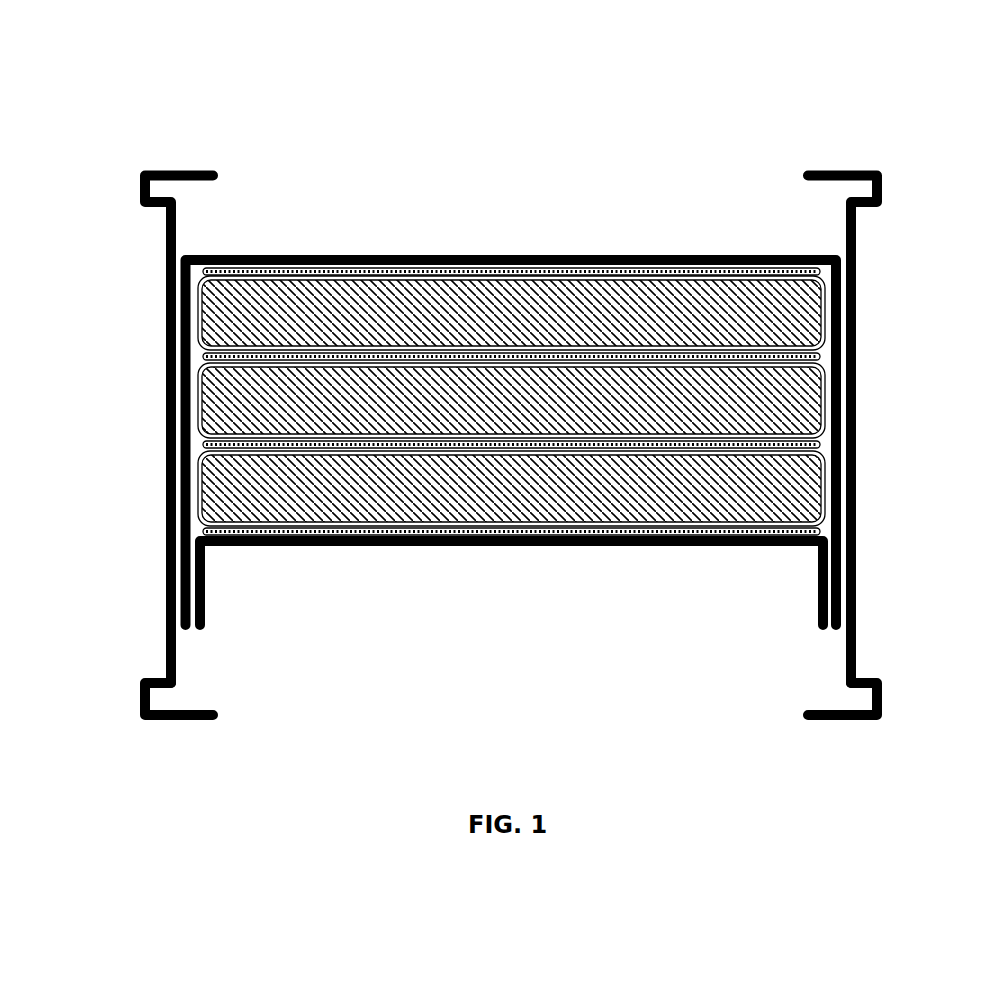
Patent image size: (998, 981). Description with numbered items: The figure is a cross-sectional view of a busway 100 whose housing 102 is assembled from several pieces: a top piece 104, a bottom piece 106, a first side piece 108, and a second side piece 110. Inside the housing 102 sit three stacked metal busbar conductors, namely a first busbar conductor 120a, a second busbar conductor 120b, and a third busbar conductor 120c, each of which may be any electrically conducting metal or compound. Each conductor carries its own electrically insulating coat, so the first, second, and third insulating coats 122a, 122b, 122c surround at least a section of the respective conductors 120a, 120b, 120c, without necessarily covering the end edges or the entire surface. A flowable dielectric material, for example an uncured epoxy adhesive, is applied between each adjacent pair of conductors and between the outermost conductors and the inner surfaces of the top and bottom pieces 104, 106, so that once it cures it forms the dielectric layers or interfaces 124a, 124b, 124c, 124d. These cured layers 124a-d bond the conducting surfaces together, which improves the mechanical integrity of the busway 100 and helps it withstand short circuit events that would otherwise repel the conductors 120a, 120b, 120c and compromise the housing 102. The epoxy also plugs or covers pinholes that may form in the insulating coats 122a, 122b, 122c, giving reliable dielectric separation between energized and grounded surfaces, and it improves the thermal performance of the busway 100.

The busway 100 is at (826, 46).
The housing 102 is at (872, 150).
The top piece 104 is at (357, 248).
The bottom piece 106 is at (355, 540).
The first side piece 108 is at (157, 635).
The second side piece 110 is at (848, 636).
The first busbar conductor 120a is at (800, 318).
The second busbar conductor 120b is at (800, 407).
The third busbar conductor 120c is at (800, 497).
The first electrically insulating coat 122a is at (815, 277).
The second electrically insulating coat 122b is at (813, 363).
The third electrically insulating coat 122c is at (813, 452).
The dielectric layer 124a is at (193, 263).
The dielectric layer 124b is at (193, 349).
The dielectric layer 124c is at (193, 437).
The dielectric layer 124d is at (193, 523).